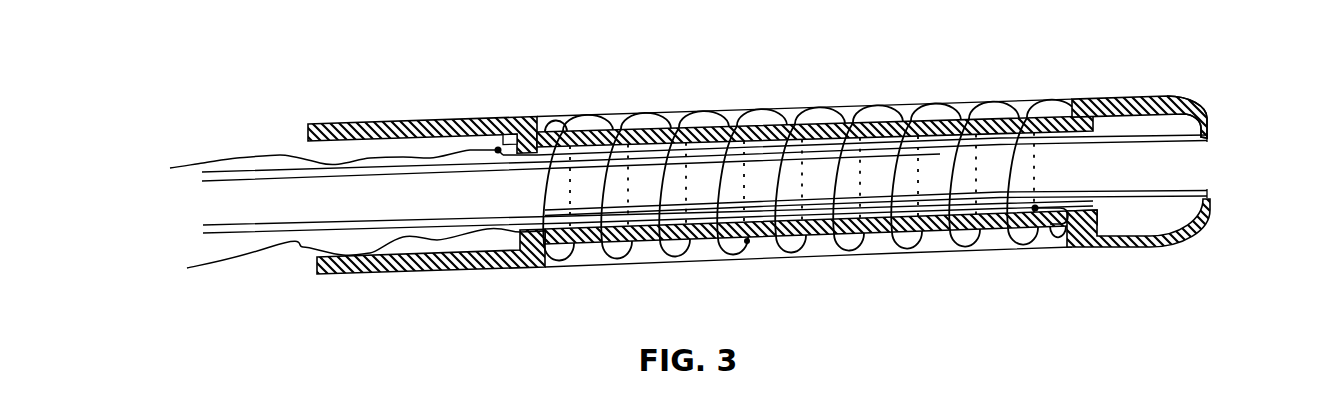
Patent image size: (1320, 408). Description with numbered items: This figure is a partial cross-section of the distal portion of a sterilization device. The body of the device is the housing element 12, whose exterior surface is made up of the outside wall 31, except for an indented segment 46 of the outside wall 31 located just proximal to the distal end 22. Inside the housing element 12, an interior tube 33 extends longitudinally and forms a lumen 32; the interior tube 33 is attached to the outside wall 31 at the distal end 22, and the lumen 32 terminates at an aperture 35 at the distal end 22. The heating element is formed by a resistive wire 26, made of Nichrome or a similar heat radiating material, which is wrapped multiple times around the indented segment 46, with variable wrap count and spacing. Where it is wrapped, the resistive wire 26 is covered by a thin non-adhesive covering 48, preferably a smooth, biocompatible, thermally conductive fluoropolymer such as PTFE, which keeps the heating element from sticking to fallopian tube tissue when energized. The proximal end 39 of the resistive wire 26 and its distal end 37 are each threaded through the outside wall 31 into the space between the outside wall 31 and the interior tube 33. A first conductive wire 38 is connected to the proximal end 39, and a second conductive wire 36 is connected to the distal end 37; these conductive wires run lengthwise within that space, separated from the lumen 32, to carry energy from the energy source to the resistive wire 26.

The housing element 12 is at (358, 104).
The distal end 22 is at (1183, 101).
The resistive wire 26 is at (596, 127).
The outside wall 31 is at (1112, 100).
The lumen 32 is at (342, 214).
The interior tube 33 is at (444, 229).
The aperture 35 is at (1194, 171).
The second conductive wire 36 is at (224, 266).
The distal end of resistive wire 37 is at (1036, 212).
The first conductive wire 38 is at (238, 157).
The proximal end of resistive wire 39 is at (497, 147).
The indented segment 46 is at (1055, 108).
The non-adhesive covering 48 is at (866, 258).